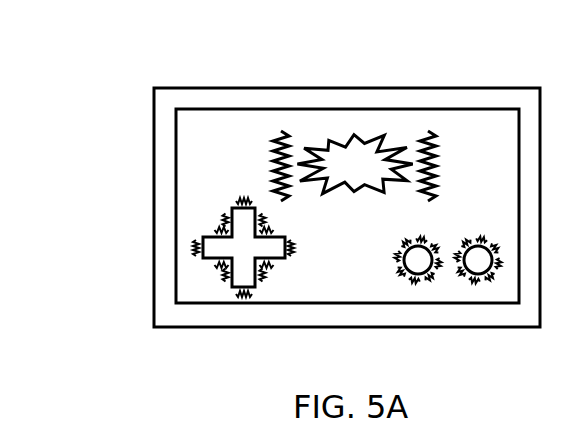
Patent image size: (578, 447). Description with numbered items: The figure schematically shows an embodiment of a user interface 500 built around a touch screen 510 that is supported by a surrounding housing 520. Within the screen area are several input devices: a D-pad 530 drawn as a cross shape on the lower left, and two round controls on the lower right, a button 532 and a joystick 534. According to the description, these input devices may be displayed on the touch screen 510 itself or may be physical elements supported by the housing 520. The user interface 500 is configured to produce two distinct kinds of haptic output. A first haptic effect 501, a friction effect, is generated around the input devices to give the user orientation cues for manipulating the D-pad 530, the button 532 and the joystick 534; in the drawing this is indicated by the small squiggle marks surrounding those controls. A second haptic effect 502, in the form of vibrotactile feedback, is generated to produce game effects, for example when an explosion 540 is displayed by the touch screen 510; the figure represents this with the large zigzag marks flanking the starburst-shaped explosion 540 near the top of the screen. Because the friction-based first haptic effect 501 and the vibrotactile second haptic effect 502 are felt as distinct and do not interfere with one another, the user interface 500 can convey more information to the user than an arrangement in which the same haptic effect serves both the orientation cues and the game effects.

The user interface 500 is at (132, 75).
The first haptic effect 501 is at (407, 287).
The second haptic effect 502 is at (422, 127).
The touch screen 510 is at (188, 158).
The housing 520 is at (167, 195).
The D-pad 530 is at (218, 248).
The button 532 is at (418, 267).
The joystick 534 is at (482, 270).
The explosion 540 is at (372, 177).